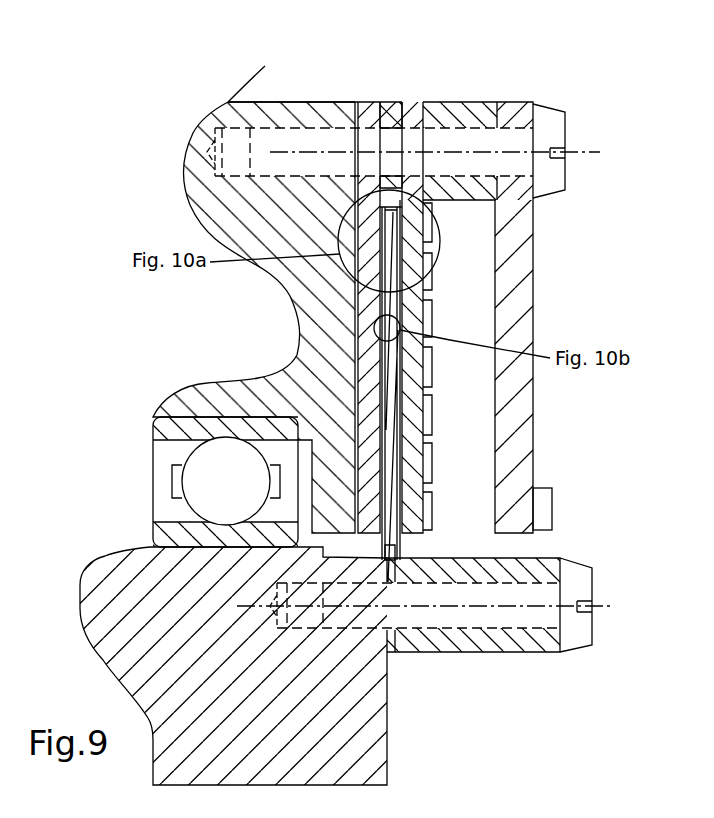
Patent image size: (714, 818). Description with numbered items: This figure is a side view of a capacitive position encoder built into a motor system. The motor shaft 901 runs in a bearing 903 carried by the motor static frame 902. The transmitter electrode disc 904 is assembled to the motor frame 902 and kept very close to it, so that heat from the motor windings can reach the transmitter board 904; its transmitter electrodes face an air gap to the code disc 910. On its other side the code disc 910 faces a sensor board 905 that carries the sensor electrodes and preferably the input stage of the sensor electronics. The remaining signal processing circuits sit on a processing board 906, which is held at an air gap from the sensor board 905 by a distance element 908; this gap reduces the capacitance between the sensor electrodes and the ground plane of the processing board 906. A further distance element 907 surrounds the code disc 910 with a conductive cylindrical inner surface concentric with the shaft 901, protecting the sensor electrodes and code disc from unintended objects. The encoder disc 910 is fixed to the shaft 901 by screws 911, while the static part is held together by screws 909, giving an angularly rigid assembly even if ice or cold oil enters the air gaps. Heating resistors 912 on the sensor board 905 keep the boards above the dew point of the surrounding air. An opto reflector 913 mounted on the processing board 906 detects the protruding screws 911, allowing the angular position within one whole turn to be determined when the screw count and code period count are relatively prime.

The motor shaft 901 is at (387, 695).
The motor static frame 902 is at (254, 378).
The bearing 903 is at (205, 420).
The transmitter electrode disc 904 is at (372, 101).
The sensor board 905 is at (417, 101).
The processing board 906 is at (510, 101).
The distance element for the code disc 907 is at (378, 101).
The distance element 908 is at (450, 101).
The screws 909 is at (557, 108).
The code disc 910 is at (373, 552).
The screws 911 is at (575, 650).
The heating resistors 912 is at (423, 315).
The opto reflector 913 is at (552, 525).